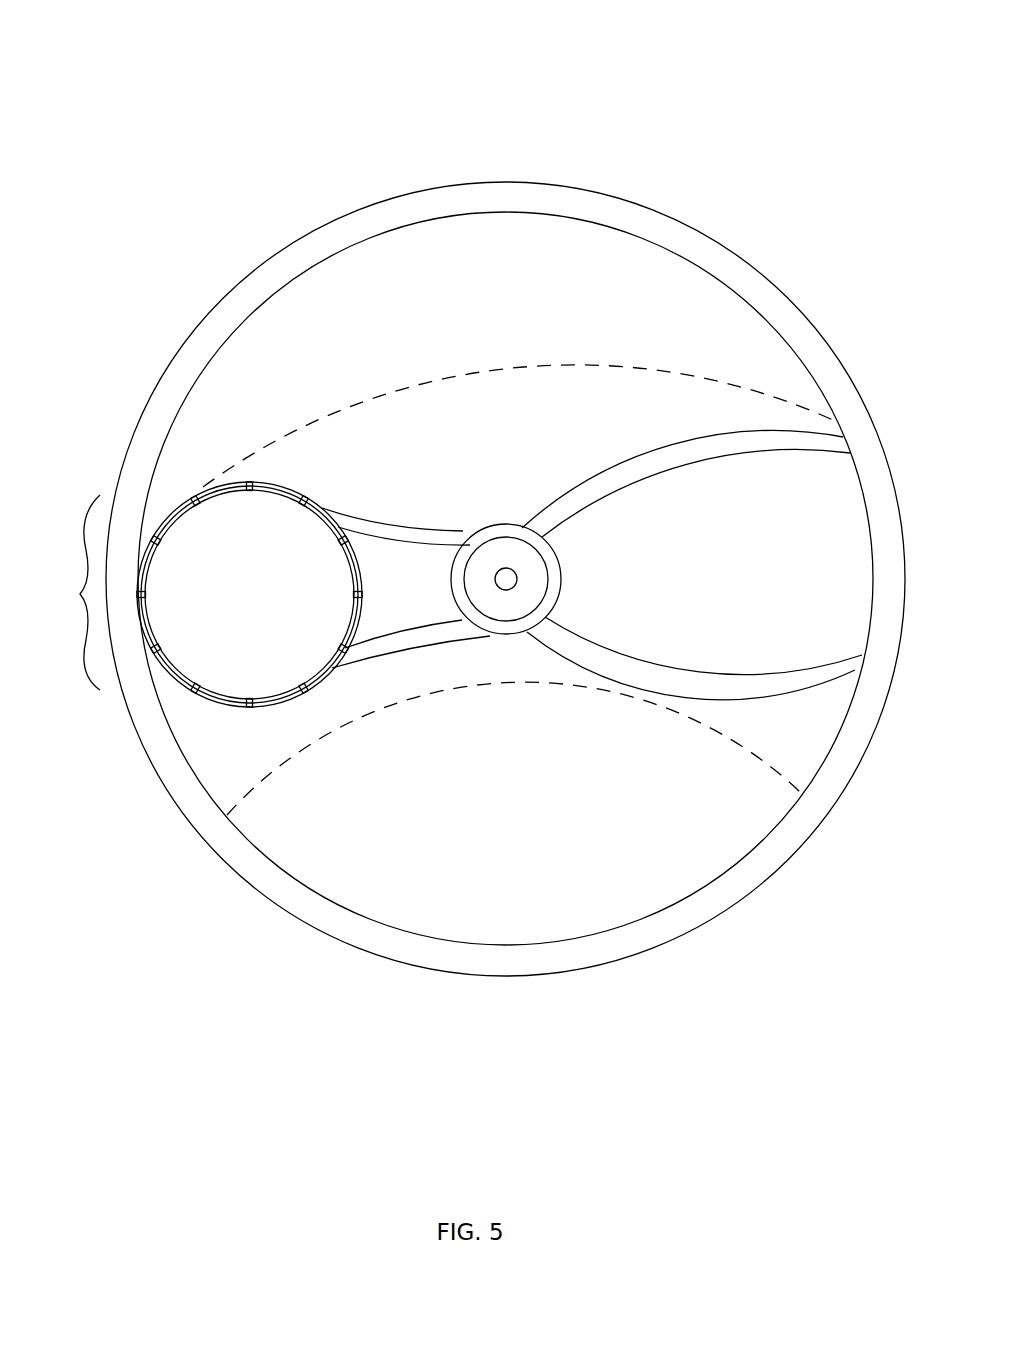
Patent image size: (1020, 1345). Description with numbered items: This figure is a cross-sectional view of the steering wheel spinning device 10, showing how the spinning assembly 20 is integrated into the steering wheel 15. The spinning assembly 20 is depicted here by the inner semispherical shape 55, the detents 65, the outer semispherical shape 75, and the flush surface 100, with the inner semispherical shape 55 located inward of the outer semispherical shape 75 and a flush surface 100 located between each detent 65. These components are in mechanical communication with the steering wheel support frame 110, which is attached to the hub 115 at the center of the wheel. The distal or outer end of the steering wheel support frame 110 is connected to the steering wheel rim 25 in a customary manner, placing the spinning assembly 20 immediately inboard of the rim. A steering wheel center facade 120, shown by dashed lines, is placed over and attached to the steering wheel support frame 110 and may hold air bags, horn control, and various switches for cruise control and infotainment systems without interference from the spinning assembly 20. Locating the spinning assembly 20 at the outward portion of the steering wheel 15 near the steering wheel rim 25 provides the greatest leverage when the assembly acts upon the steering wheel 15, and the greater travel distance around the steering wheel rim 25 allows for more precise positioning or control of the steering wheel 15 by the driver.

The steering wheel spinning device 10 is at (152, 137).
The steering wheel 15 is at (609, 850).
The spinning assembly 20 is at (80, 595).
The steering wheel rim 25 is at (155, 435).
The inner semispherical shape 55 is at (273, 705).
The detents 65 is at (196, 690).
The outer semispherical shape 75 is at (183, 687).
The flush surface 100 is at (232, 705).
The steering wheel support frame 110 is at (400, 543).
The hub 115 is at (515, 567).
The steering wheel center facade 120 is at (525, 366).